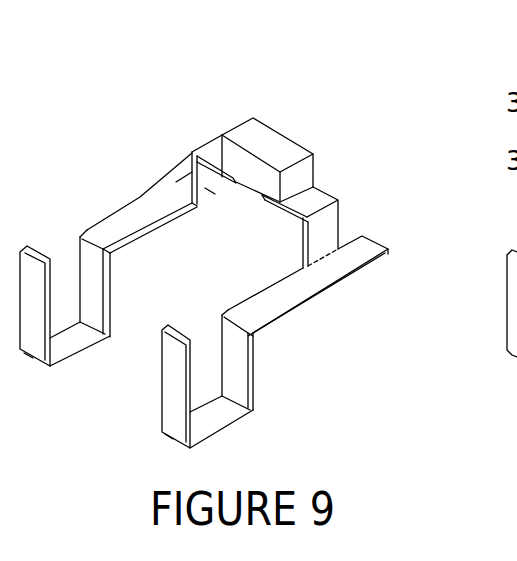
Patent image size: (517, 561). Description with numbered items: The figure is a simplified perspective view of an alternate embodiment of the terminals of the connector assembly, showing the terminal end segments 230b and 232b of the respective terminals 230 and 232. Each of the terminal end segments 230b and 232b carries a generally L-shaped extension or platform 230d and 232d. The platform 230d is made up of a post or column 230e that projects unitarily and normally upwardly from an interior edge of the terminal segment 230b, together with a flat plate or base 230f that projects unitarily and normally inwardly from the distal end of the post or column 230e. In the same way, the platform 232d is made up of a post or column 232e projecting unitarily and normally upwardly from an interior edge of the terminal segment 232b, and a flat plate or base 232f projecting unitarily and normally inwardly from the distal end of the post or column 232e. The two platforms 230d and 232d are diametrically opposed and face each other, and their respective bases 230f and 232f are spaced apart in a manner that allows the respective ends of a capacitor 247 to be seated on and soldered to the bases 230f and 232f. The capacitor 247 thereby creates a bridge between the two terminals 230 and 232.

The terminal 230 is at (328, 283).
The terminal end segment 230b is at (367, 249).
The generally L-shaped extension or platform 230d is at (342, 222).
The post or column 230e is at (336, 215).
The flat plate or base 230f is at (274, 195).
The terminal 232 is at (170, 208).
The terminal end segment 232b is at (163, 200).
The generally L-shaped extension or platform 232d is at (181, 161).
The post or column 232e is at (203, 190).
The flat plate or base 232f is at (217, 182).
The capacitor 247 is at (268, 148).